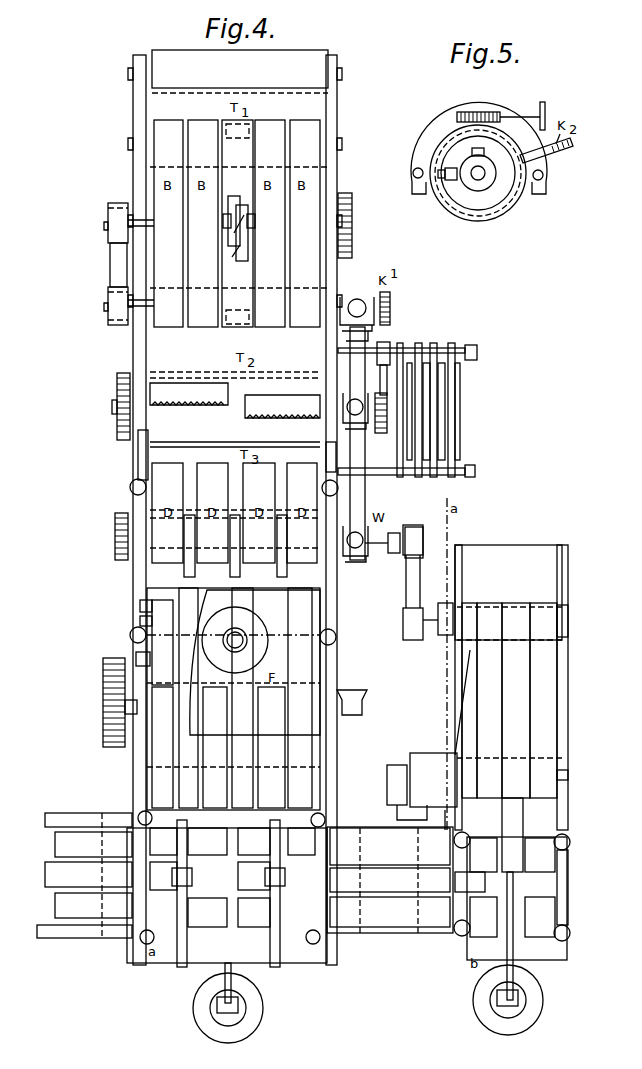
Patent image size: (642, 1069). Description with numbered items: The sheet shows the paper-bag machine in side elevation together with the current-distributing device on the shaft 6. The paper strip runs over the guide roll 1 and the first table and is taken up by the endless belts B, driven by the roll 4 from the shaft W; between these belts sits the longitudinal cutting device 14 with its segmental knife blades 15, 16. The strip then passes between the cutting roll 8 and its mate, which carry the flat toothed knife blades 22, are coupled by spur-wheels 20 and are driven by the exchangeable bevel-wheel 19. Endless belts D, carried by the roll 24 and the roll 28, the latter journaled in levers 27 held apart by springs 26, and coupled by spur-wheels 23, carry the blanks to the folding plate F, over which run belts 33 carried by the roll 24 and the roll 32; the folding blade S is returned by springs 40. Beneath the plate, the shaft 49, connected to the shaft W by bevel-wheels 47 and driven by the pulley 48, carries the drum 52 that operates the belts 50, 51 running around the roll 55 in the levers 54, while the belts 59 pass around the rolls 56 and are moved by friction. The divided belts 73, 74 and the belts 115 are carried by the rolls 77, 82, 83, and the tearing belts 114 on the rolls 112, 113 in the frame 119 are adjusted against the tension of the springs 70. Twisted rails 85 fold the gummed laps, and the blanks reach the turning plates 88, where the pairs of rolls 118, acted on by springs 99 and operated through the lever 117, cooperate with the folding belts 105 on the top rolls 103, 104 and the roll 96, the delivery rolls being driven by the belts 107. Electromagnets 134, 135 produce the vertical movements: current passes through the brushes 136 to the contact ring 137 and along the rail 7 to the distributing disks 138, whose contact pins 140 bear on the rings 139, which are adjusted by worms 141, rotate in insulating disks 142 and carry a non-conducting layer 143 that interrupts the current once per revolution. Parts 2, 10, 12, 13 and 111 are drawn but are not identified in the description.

In FIG. 4, the guide roll 1 is at (240, 71).
In FIG. 4, the central column upper 2 is at (237, 223).
In FIG. 4, the roll 4 is at (237, 307).
In FIG. 4, the cutting roll 8 is at (235, 412).
In FIG. 4, the upper pulley 10 is at (108, 220).
In FIG. 4, the gear 12 is at (352, 220).
In FIG. 4, the belt pulley 13 is at (110, 277).
In FIG. 4, the longitudinal cutting device 14 is at (234, 196).
In FIG. 4, the side knife blades 15 is at (238, 272).
In FIG. 4, the knife blades 16 is at (248, 236).
In FIG. 4, the bevel-wheel 19 is at (350, 398).
In FIG. 4, the spur-wheels 20 is at (122, 373).
In FIG. 4, the flat toothed knife blade 22 is at (187, 406).
In FIG. 4, the spur-wheels 23 is at (115, 556).
In FIG. 4, the roll 24 is at (242, 544).
In FIG. 4, the springs 26 is at (130, 490).
In FIG. 4, the levers 27 is at (326, 457).
In FIG. 4, the roll 28 is at (236, 495).
In FIG. 4, the roll 32 is at (303, 640).
In FIG. 4, the belts 33 is at (184, 539).
In FIG. 4, the springs 40 is at (130, 636).
In FIG. 4, the bevel-wheels 47 is at (353, 705).
In FIG. 4, the pulley 48 is at (118, 748).
In FIG. 4, the shaft 49 is at (103, 708).
In FIG. 4, the belts 50 is at (245, 752).
In FIG. 4, the belts 51 is at (218, 747).
In FIG. 4, the drum 52 is at (326, 755).
In FIG. 4, the levers 54 is at (138, 620).
In FIG. 4, the roll 55 is at (162, 642).
In FIG. 4, the rolls 56 is at (140, 603).
In FIG. 4, the belts 59 is at (236, 688).
In FIG. 4, the springs 70 is at (336, 962).
In FIG. 4, the belts 73 is at (390, 880).
In FIG. 4, the belts 74 is at (84, 875).
In FIG. 4, the roll 77 is at (100, 925).
In FIG. 4, the roll 82 is at (360, 940).
In FIG. 4, the roll 83 is at (418, 901).
In FIG. 4, the longitudinally twisted rails 85 is at (400, 826).
In FIG. 4, the turning plates 88 is at (512, 867).
In FIG. 4, the roll 96 is at (436, 637).
In FIG. 4, the springs 99 is at (570, 842).
In FIG. 4, the top roll 103 is at (562, 795).
In FIG. 4, the top roll 104 is at (568, 640).
In FIG. 4, the folding belts 105 is at (509, 700).
In FIG. 4, the belts 107 is at (405, 592).
In FIG. 4, the block 111 is at (190, 843).
In FIG. 4, the rolls 112 is at (186, 859).
In FIG. 4, the rolls 113 is at (276, 859).
In FIG. 4, the belts 114 is at (229, 912).
In FIG. 4, the belts 115 is at (511, 592).
In FIG. 4, the lever 117 is at (196, 964).
In FIG. 4, the pairs of rolls 118 is at (566, 860).
In FIG. 4, the frame 119 is at (455, 884).
In FIG. 4, the electromagnet 134 is at (240, 998).
In FIG. 4, the electromagnet 135 is at (258, 1011).
In FIG. 4, the brushes 136 is at (388, 342).
In FIG. 4, the insulated contact ring 137 is at (382, 433).
In FIG. 5, the distributing disks 138 is at (482, 186).
In FIG. 4, the rings 139 is at (432, 477).
In FIG. 5, the rings 139 is at (520, 190).
In FIG. 5, the contact pins 140 is at (442, 170).
In FIG. 5, the worms 141 is at (480, 110).
In FIG. 5, the insulating disk 142 is at (426, 134).
In FIG. 5, the non-conducting layer 143 is at (478, 222).
In FIG. 4, the shaft 6 is at (457, 412).
In FIG. 5, the shaft 6 is at (485, 170).
In FIG. 5, the rail 7 is at (478, 144).